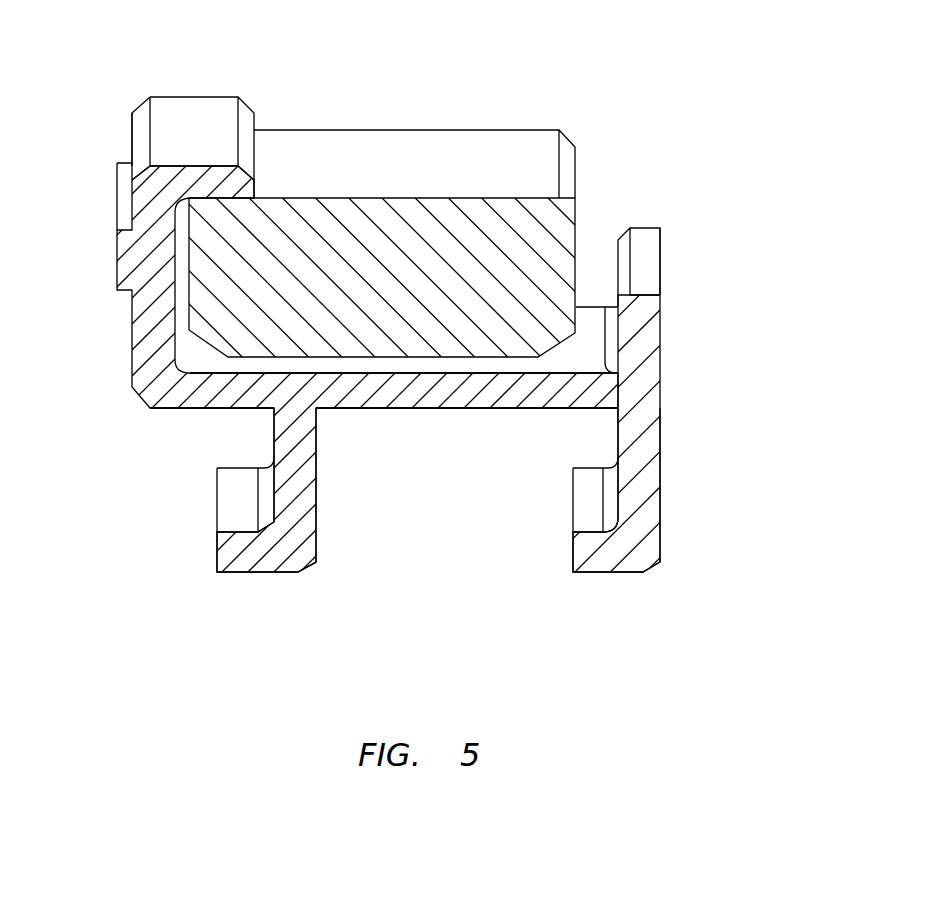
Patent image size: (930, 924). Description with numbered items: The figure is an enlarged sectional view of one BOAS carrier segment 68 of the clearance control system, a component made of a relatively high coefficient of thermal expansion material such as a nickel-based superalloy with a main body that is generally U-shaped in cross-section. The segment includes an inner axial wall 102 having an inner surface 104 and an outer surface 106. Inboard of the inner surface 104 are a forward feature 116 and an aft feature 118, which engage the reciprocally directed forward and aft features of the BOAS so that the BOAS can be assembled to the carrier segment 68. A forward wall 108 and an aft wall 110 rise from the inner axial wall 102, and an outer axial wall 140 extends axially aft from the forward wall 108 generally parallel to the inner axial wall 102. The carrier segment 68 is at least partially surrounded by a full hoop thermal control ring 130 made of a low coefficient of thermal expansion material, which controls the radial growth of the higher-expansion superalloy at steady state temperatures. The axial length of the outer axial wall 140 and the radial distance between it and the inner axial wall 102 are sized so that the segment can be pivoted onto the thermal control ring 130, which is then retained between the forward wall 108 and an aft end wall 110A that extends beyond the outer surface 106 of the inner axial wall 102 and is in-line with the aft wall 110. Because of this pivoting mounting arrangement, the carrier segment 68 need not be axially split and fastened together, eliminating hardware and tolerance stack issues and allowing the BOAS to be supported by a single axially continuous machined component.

The BOAS carrier segment 68 is at (722, 245).
The inner axial wall 102 is at (435, 397).
The inner surface 104 is at (360, 408).
The outer surface 106 is at (497, 372).
The forward wall 108 is at (150, 293).
The aft wall 110 is at (628, 351).
The aft end wall 110A is at (645, 237).
The forward feature 116 is at (267, 563).
The aft feature 118 is at (618, 563).
The thermal control ring 130 is at (535, 142).
The outer axial wall 140 is at (212, 108).